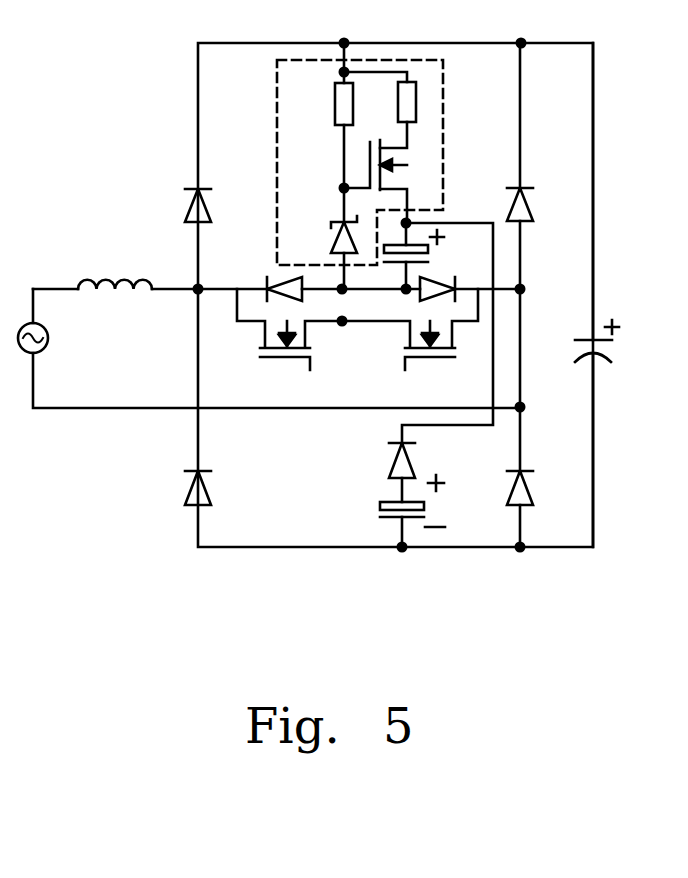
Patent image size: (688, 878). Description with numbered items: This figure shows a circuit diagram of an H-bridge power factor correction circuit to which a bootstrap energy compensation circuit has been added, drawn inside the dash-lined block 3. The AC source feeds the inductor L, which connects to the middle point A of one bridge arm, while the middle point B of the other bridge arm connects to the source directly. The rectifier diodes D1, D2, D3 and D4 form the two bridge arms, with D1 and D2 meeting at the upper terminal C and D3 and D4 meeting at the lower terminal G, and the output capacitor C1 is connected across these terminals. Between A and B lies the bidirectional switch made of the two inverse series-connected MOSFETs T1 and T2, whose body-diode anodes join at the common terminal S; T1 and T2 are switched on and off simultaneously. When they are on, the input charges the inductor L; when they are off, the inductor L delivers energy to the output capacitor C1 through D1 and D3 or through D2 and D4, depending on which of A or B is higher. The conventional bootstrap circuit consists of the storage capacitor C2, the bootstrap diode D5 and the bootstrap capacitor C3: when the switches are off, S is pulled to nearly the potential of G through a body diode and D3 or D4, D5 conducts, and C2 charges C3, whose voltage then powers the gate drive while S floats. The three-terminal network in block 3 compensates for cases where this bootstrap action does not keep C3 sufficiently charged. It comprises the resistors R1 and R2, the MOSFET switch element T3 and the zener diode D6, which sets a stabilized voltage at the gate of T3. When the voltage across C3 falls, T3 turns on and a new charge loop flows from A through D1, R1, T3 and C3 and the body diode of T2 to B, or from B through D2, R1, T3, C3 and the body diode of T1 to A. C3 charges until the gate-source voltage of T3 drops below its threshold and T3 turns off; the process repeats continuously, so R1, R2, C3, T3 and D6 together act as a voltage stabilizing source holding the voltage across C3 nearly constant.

The dash-lined block 3 is at (443, 62).
The resistor R1 is at (426, 103).
The resistor R2 is at (321, 104).
The switch element T1 is at (289, 346).
The switch element T2 is at (410, 345).
The switch element T3 is at (394, 165).
The rectifier diode D1 is at (217, 190).
The rectifier diode D2 is at (538, 189).
The rectifier diode D3 is at (538, 476).
The rectifier diode D4 is at (217, 474).
The bootstrap diode D5 is at (431, 458).
The stabilivolt D6 is at (323, 234).
The output capacitor C1 is at (614, 337).
The storage capacitor C2 is at (433, 505).
The bootstrap capacitor C3 is at (433, 249).
The inductor L is at (115, 268).
The middle point A is at (181, 278).
The middle point B is at (533, 278).
The terminal C is at (351, 31).
The terminal S is at (353, 304).
The terminal G is at (402, 566).